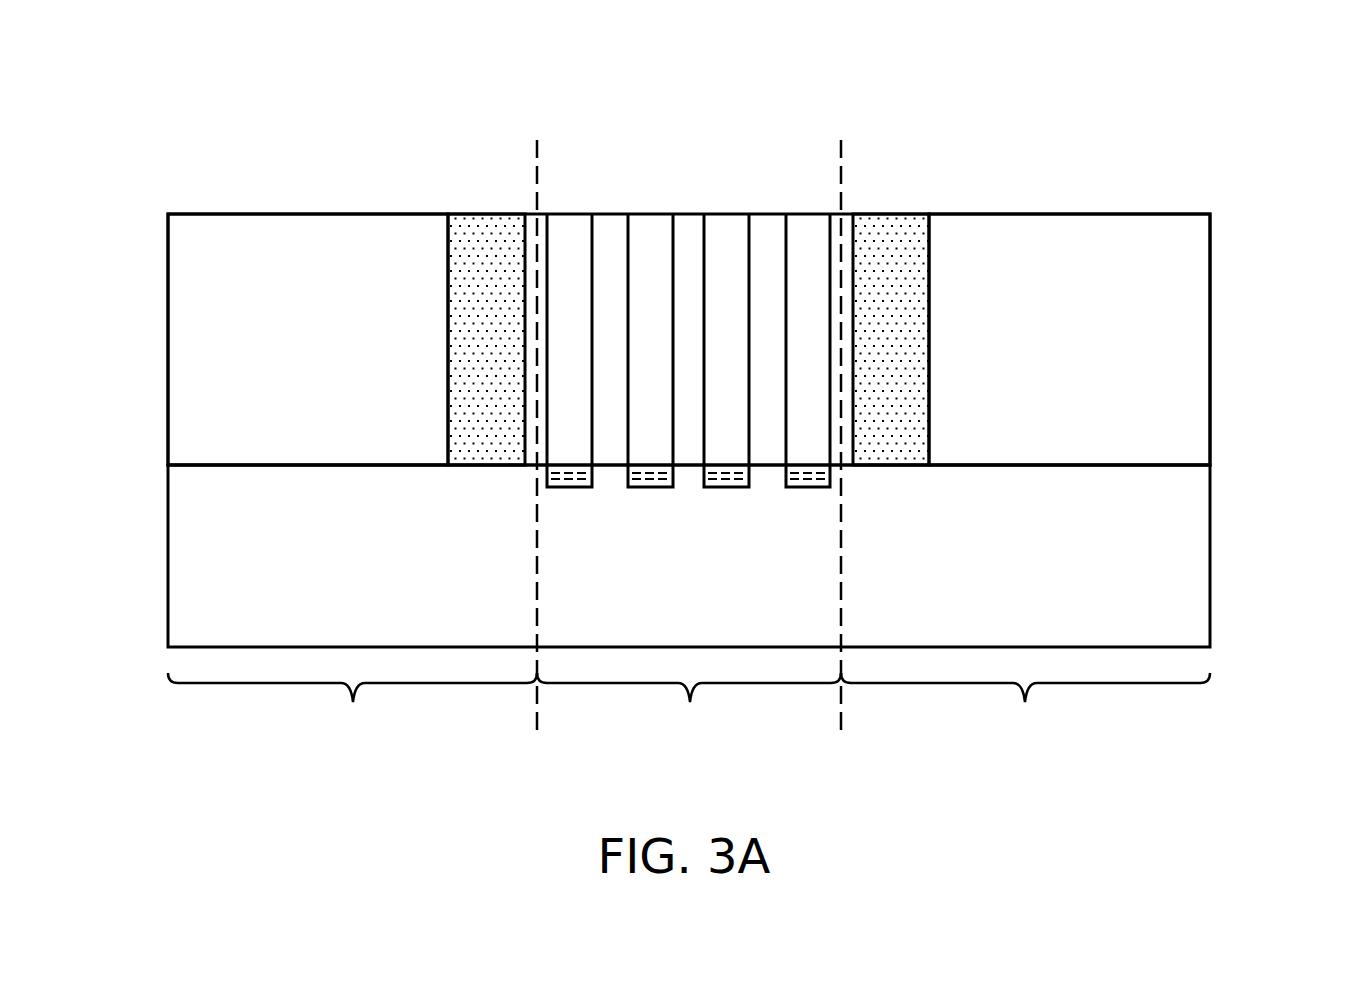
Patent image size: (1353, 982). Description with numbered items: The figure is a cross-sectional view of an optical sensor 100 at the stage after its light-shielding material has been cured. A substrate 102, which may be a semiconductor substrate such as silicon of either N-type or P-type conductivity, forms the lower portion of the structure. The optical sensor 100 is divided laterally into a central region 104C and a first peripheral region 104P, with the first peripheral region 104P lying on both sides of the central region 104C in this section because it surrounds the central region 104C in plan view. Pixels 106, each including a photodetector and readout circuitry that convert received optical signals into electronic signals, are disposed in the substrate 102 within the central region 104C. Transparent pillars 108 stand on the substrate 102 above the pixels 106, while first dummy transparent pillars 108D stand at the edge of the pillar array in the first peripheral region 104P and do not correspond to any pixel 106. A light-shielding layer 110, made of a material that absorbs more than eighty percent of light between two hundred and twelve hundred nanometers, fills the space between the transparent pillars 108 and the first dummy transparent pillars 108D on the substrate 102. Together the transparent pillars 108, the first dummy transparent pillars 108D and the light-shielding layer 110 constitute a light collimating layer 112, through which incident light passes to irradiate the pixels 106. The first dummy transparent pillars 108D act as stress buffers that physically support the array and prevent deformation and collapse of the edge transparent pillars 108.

The optical sensor 100 is at (145, 133).
The substrate 102 is at (1043, 595).
The first peripheral region 104P is at (689, 706).
The central region 104C is at (689, 439).
The pixels 106 is at (803, 473).
The transparent pillars 108 is at (810, 237).
The first dummy transparent pillars 108D is at (893, 237).
The light-shielding layer 110 is at (333, 357).
The light collimating layer 112 is at (1213, 285).